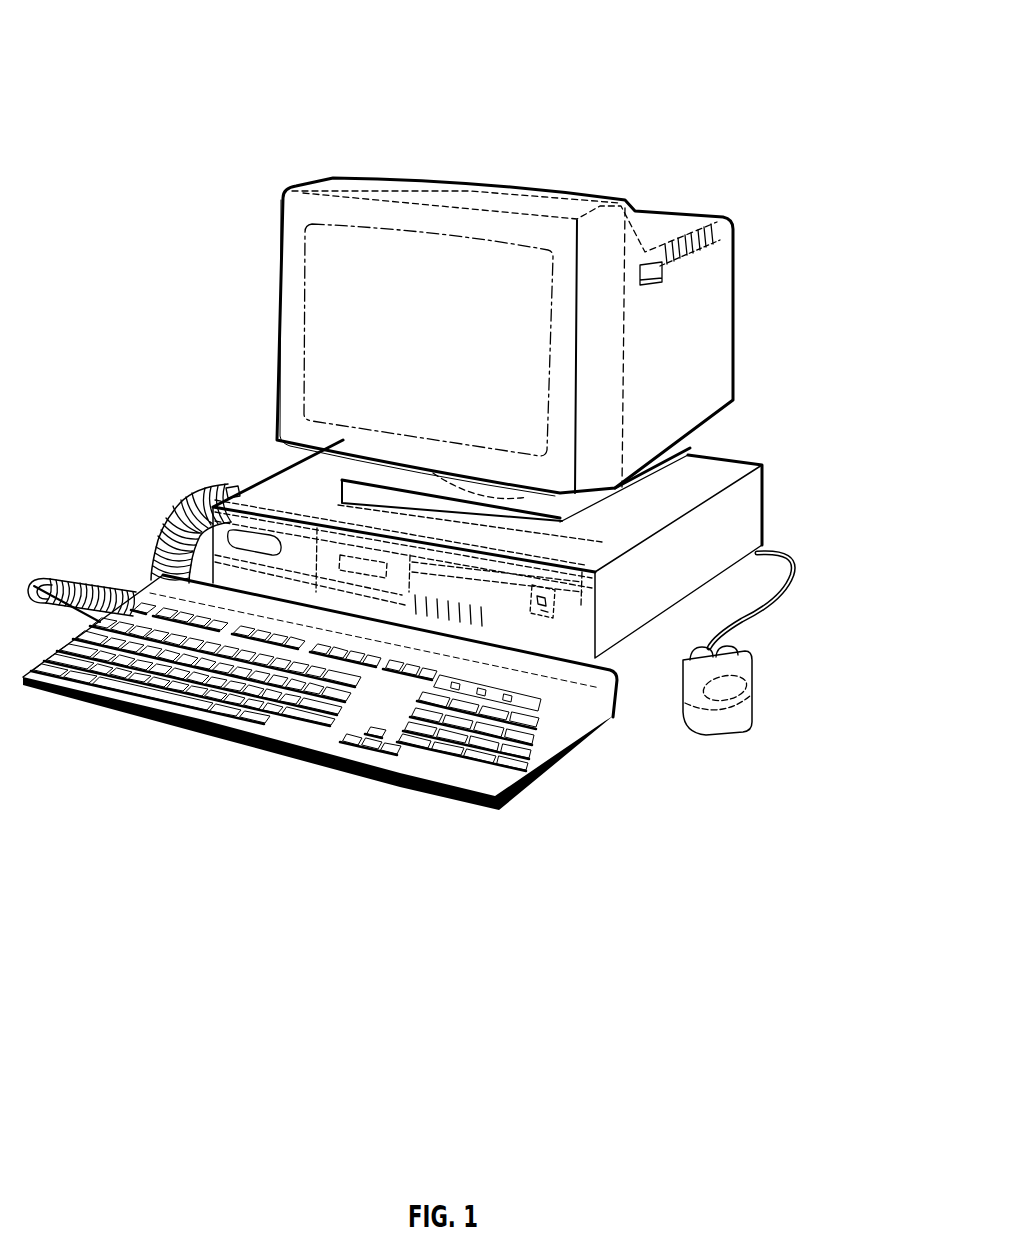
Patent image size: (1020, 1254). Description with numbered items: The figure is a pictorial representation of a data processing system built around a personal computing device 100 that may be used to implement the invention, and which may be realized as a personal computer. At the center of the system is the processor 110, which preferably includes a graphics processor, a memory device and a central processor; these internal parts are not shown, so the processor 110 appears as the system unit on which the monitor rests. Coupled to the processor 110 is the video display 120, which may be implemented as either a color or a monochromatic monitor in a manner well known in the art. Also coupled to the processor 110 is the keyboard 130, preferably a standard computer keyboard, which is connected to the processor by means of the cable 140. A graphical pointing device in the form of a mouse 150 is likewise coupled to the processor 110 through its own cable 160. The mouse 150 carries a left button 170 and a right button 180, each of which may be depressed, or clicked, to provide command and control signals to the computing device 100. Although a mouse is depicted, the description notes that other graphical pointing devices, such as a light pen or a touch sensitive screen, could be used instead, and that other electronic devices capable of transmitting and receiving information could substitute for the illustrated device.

The computing device 100 is at (438, 446).
The processor 110 is at (748, 500).
The video display 120 is at (278, 388).
The keyboard 130 is at (317, 763).
The cable 140 is at (176, 503).
The mouse 150 is at (734, 717).
The cable 160 is at (767, 597).
The left button 170 is at (687, 661).
The right button 180 is at (735, 653).